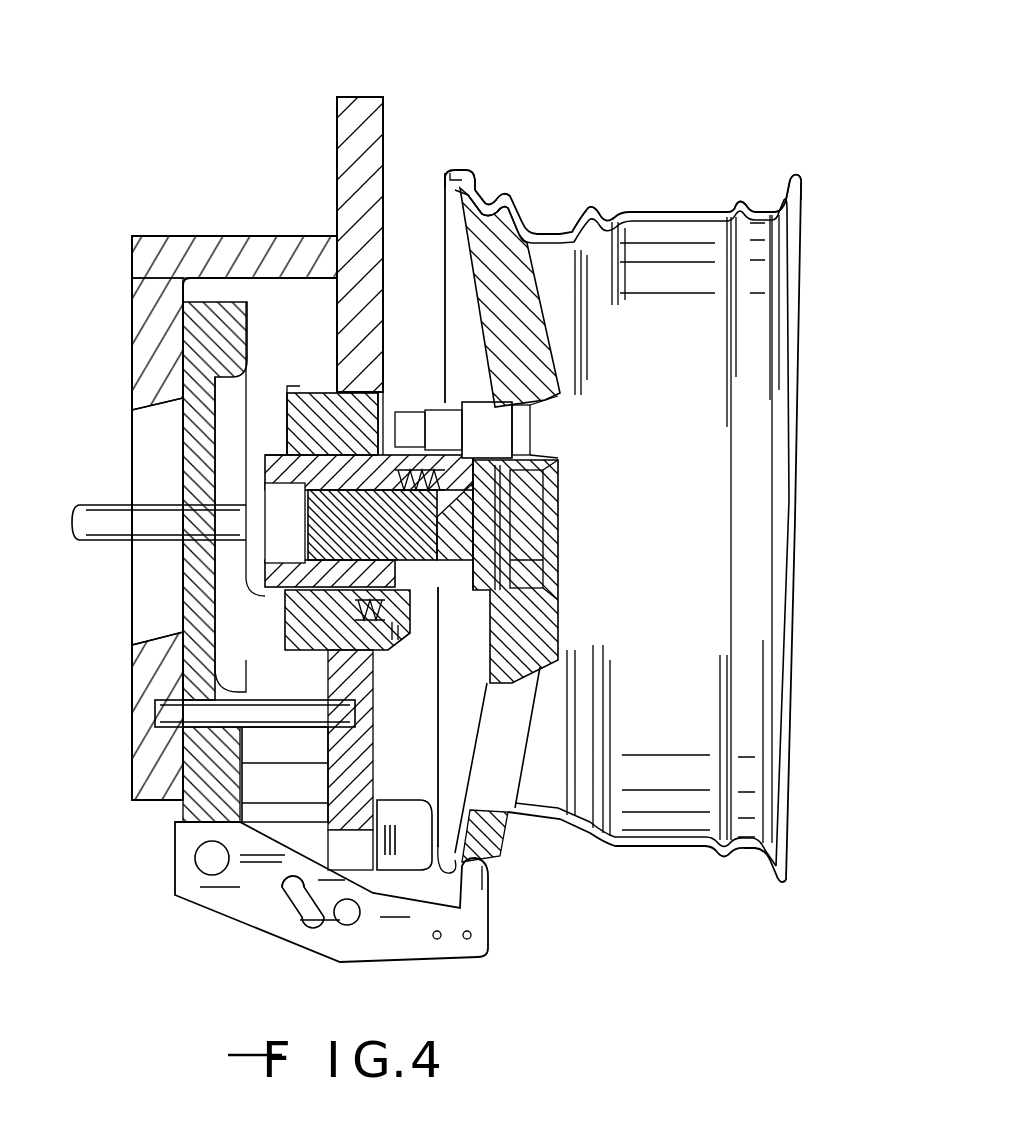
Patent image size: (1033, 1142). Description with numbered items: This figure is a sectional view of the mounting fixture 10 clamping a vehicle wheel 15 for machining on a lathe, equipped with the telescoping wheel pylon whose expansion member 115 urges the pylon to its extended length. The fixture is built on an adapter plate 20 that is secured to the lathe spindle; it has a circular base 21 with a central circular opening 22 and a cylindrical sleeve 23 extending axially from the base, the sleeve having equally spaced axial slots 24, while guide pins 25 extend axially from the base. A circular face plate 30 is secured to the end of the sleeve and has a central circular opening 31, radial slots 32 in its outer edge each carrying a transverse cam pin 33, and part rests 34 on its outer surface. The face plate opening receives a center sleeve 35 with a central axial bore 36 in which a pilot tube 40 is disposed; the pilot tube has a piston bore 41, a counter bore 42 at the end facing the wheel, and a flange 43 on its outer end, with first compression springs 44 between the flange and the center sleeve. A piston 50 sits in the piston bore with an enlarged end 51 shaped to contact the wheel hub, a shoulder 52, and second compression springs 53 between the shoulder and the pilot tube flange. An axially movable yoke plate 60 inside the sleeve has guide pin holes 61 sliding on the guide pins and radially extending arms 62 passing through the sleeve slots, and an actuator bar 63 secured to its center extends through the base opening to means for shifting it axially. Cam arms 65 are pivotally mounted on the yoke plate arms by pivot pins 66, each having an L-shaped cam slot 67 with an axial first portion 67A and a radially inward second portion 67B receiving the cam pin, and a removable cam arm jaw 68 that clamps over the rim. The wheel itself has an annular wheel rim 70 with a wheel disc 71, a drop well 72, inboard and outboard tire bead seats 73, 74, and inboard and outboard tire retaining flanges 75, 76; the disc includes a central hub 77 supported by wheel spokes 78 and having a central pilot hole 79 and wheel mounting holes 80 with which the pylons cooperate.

The mounting fixture 10 is at (290, 88).
The vehicle wheel 15 is at (594, 140).
The adapter plate 20 is at (193, 200).
The circular base 21 is at (135, 306).
The central circular opening 22 is at (118, 440).
The cylindrical sleeve 23 is at (220, 238).
The axial slots 24 is at (258, 818).
The guide pins 25 is at (300, 728).
The face plate 30 is at (372, 132).
The central circular opening 31 is at (323, 382).
The radial slots 32 is at (362, 866).
The cam pin 33 is at (366, 930).
The part rests 34 is at (388, 805).
The center sleeve 35 is at (290, 386).
The central axial bore 36 is at (272, 436).
The pilot tube 40 is at (270, 598).
The piston bore 41 is at (298, 560).
The counter bore 42 is at (428, 602).
The flange 43 is at (393, 632).
The first compression springs 44 is at (375, 622).
The piston 50 is at (322, 514).
The piston end 51 is at (480, 548).
The shoulder 52 is at (470, 545).
The second compression springs 53 is at (545, 488).
The yoke plate 60 is at (240, 305).
The guide pin holes 61 is at (244, 700).
The radially extending arms 62 is at (170, 804).
The actuator bar 63 is at (104, 548).
The cam arms 65 is at (312, 960).
The pivot pin 66 is at (192, 858).
The cam slot 67 is at (295, 910).
The first portion 67A is at (345, 926).
The second portion 67B is at (290, 888).
The cam arm jaw 68 is at (475, 893).
The wheel rim 70 is at (624, 185).
The wheel disc 71 is at (565, 340).
The drop well 72 is at (588, 207).
The inboard tire bead seat 73 is at (748, 200).
The outboard tire bead seat 74 is at (485, 193).
The inboard tire retaining flange 75 is at (778, 172).
The outboard tire retaining flange 76 is at (458, 168).
The central hub 77 is at (548, 608).
The wheel spokes 78 is at (520, 310).
The central pilot hole 79 is at (560, 480).
The wheel mounting holes 80 is at (570, 408).
The expansion member 115 is at (502, 443).